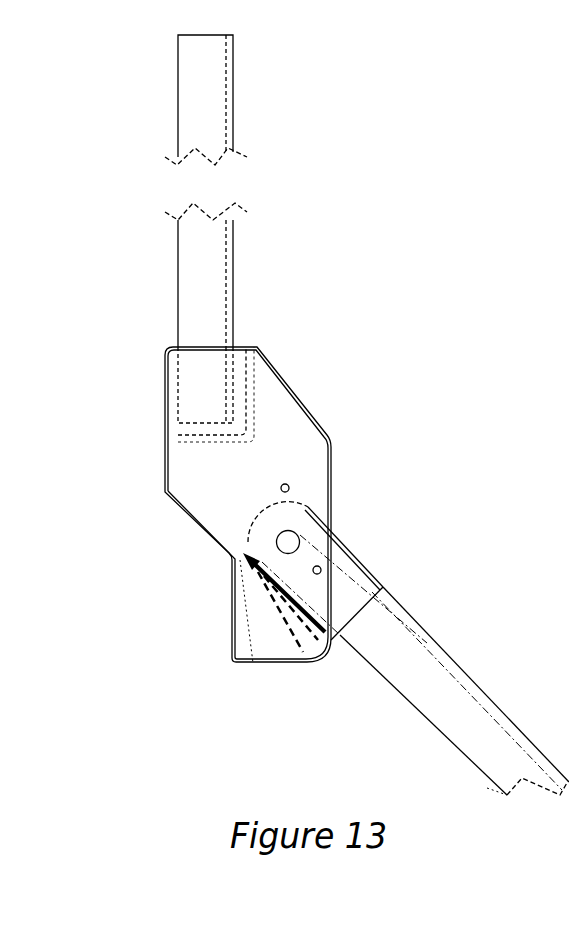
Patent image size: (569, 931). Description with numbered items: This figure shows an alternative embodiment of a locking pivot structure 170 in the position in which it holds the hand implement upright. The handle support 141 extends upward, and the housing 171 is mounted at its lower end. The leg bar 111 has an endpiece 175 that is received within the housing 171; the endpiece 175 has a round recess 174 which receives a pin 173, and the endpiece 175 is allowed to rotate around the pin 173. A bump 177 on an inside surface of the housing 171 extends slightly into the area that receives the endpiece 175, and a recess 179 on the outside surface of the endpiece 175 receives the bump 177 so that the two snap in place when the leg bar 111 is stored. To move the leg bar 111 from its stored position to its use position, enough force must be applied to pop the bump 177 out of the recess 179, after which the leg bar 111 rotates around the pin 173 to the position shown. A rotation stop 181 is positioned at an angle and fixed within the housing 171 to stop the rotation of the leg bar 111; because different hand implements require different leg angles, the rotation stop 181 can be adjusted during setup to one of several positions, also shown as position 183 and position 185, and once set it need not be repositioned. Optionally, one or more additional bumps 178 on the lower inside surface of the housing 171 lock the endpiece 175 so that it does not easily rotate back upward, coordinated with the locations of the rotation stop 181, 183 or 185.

The leg bar 111 is at (473, 680).
The handle support 141 is at (178, 245).
The locking pivot structure 170 is at (138, 597).
The housing 171 is at (303, 399).
The pin 173 is at (290, 541).
The round recess 174 is at (247, 556).
The endpiece 175 is at (368, 573).
The bump 177 is at (289, 488).
The additional bumps 178 is at (313, 573).
The recess 179 is at (321, 571).
The rotation stop 181 is at (319, 645).
The rotation stop position 183 is at (292, 622).
The rotation stop position 185 is at (278, 614).